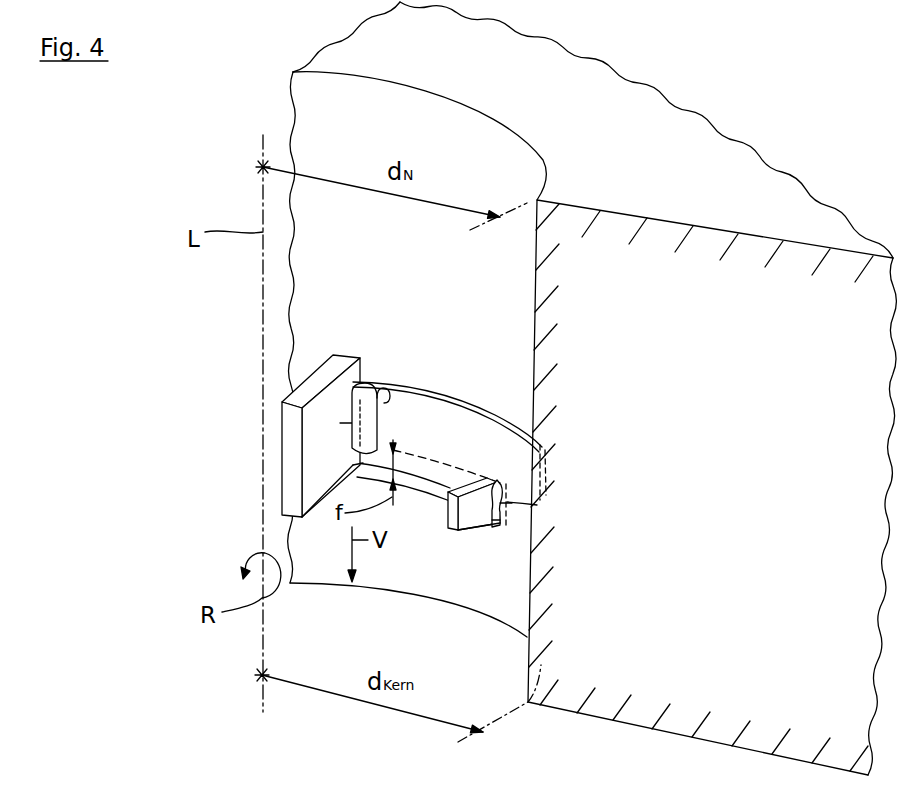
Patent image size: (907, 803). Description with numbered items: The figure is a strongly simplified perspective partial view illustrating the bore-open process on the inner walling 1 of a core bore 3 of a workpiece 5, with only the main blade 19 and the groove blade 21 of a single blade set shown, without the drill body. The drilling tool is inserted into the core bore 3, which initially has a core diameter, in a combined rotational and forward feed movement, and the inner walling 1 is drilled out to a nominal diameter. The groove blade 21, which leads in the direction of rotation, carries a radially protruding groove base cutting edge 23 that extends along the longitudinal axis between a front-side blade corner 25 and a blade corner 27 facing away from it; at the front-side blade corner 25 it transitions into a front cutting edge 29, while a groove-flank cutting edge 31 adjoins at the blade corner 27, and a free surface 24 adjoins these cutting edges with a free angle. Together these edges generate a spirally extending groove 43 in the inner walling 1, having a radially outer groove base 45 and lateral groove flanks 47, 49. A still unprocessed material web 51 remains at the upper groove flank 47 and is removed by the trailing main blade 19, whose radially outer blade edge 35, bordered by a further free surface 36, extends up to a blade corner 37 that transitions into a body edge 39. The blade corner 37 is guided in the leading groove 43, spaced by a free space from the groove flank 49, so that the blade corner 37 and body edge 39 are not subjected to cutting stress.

The inner walling 1 is at (426, 574).
The core bore 3 is at (390, 592).
The workpiece 5 is at (712, 100).
The main blade 19 is at (240, 457).
The groove blade 21 is at (598, 513).
The groove base cutting edge 23 is at (505, 503).
The free surface 24 is at (498, 478).
The front-side blade corner 25 is at (500, 521).
The blade corner 27 is at (506, 498).
The front cutting edge 29 is at (566, 592).
The groove-flank cutting edge 31 is at (470, 485).
The radially outer blade edge 35 is at (352, 423).
The further free surface 36 is at (325, 380).
The blade corner 37 is at (357, 464).
The body edge 39 is at (355, 475).
The spirally extending groove 43 is at (449, 380).
The radially outer groove base 45 is at (425, 465).
The upper groove flank 47 is at (392, 438).
The groove flank 49 is at (430, 482).
The material web 51 is at (476, 449).